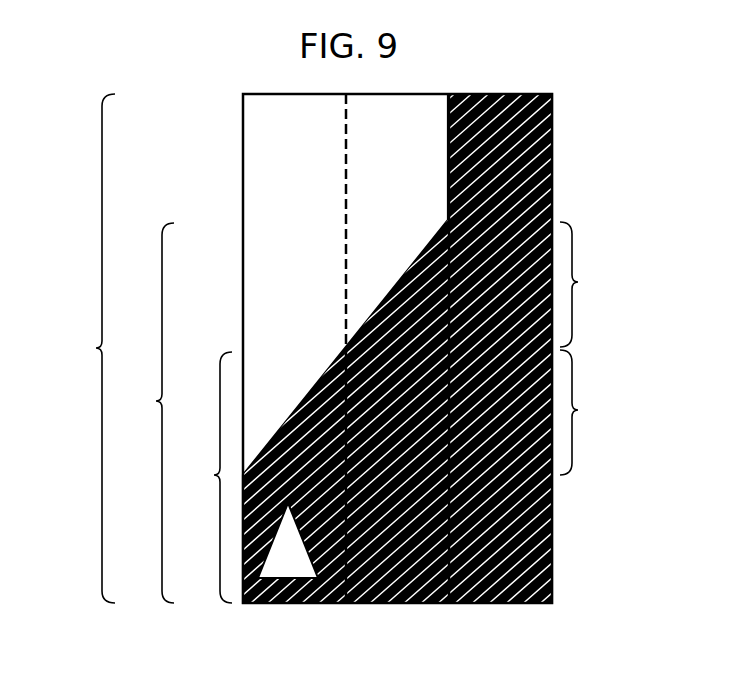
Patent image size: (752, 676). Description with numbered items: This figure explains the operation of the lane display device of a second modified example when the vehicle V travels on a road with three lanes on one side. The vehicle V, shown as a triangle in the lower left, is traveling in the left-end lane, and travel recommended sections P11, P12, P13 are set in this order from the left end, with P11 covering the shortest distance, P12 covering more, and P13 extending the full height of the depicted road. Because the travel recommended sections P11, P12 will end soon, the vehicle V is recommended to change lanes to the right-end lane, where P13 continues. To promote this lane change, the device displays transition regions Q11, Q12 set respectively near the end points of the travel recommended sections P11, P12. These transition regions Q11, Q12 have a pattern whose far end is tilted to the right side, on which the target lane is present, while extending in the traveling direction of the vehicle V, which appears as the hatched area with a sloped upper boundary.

The travel recommended section P13 is at (83, 348).
The travel recommended section P12 is at (145, 413).
The travel recommended section P11 is at (203, 477).
The transition region Q12 is at (591, 284).
The transition region Q11 is at (590, 412).
The vehicle V is at (290, 565).